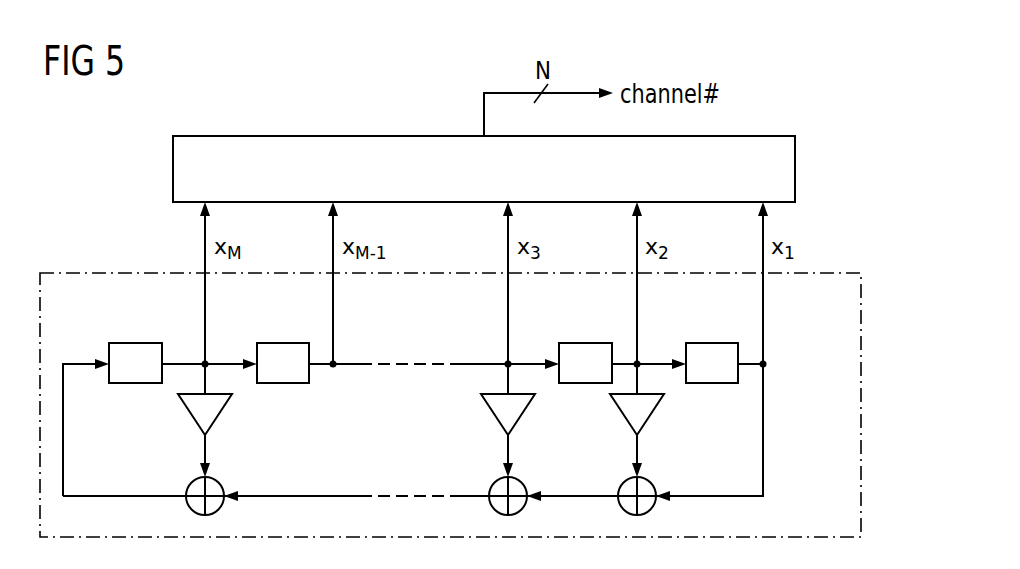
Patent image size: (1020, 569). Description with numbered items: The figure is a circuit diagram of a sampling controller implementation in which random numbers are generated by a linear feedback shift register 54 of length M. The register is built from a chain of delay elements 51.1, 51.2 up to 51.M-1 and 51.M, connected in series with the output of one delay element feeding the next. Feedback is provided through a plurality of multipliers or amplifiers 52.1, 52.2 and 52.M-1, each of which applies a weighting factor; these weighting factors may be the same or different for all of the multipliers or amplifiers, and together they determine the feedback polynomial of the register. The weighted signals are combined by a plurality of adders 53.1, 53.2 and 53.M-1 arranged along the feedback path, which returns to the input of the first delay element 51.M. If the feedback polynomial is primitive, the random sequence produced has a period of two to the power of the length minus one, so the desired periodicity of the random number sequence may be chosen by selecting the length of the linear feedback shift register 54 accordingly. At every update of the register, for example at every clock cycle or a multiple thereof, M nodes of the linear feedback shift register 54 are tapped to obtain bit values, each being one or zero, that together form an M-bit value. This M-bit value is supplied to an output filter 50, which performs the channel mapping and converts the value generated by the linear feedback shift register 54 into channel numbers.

The output filter 50 is at (318, 136).
The linear feedback shift register 54 is at (92, 273).
The delay element 51.M is at (136, 343).
The delay element 51.M-1 is at (282, 343).
The delay element 51.2 is at (586, 343).
The delay element 51.1 is at (712, 343).
The multiplier or amplifier 52.M-1 is at (223, 412).
The multiplier or amplifier 52.2 is at (490, 415).
The multiplier or amplifier 52.1 is at (653, 412).
The adder 53.M-1 is at (192, 482).
The adder 53.2 is at (494, 482).
The adder 53.1 is at (623, 482).